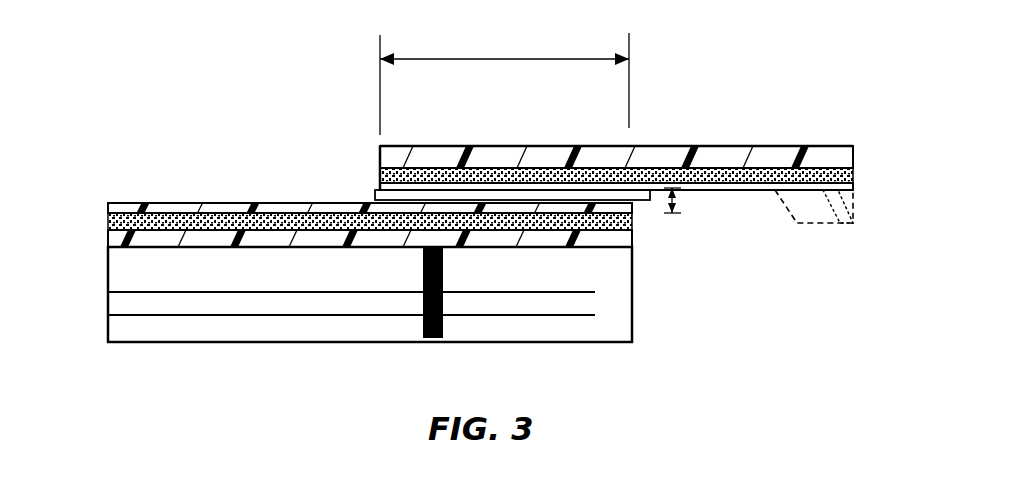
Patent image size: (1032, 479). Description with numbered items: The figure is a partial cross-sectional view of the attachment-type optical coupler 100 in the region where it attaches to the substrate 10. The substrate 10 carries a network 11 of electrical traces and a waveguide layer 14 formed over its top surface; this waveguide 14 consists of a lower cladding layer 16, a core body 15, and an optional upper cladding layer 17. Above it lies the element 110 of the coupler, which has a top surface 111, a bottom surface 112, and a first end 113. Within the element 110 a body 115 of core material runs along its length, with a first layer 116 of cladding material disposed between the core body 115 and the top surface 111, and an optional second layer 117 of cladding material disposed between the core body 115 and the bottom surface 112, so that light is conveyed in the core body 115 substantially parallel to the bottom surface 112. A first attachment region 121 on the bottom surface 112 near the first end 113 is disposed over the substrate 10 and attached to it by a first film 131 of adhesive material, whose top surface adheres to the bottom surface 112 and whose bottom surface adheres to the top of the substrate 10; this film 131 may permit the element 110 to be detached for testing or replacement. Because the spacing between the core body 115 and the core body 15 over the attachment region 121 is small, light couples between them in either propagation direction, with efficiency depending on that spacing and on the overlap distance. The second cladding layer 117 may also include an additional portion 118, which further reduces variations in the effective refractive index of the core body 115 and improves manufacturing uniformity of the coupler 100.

The optical coupler 100 is at (311, 88).
The substrate 10 is at (443, 340).
The network of electrical traces 11 is at (248, 315).
The waveguide layer 14 is at (108, 248).
The core body 15 is at (117, 222).
The lower cladding layer 16 is at (117, 238).
The upper cladding layer 17 is at (115, 208).
The element 110 is at (548, 143).
The top surface 111 is at (687, 146).
The bottom surface 112 is at (748, 191).
The first end 113 is at (378, 163).
The body of core material 115 is at (850, 176).
The first layer of cladding material 116 is at (847, 160).
The second layer of cladding material 117 is at (850, 188).
The additional portion 118 is at (822, 213).
The first attachment region 121 is at (437, 213).
The first film of adhesive material 131 is at (440, 214).